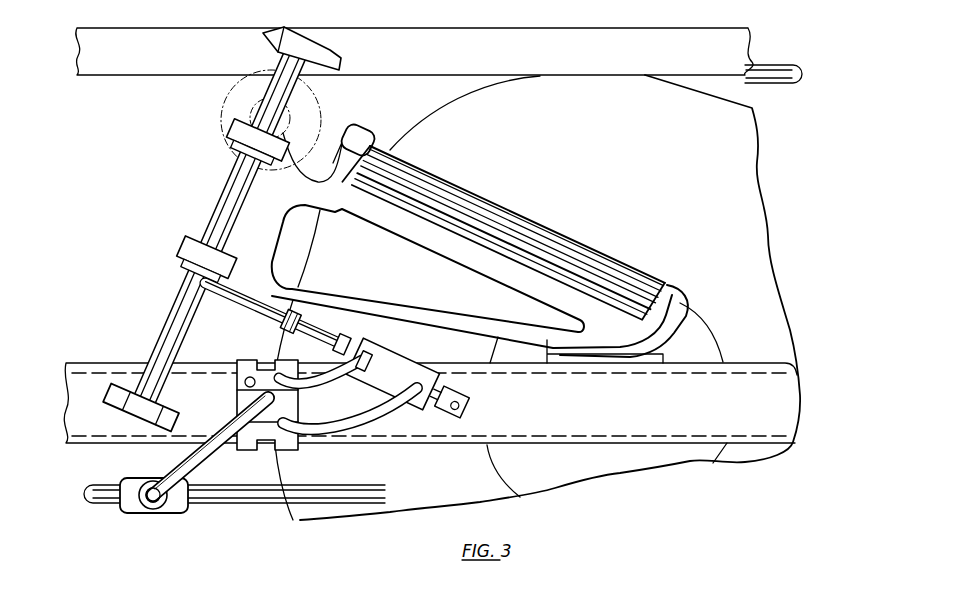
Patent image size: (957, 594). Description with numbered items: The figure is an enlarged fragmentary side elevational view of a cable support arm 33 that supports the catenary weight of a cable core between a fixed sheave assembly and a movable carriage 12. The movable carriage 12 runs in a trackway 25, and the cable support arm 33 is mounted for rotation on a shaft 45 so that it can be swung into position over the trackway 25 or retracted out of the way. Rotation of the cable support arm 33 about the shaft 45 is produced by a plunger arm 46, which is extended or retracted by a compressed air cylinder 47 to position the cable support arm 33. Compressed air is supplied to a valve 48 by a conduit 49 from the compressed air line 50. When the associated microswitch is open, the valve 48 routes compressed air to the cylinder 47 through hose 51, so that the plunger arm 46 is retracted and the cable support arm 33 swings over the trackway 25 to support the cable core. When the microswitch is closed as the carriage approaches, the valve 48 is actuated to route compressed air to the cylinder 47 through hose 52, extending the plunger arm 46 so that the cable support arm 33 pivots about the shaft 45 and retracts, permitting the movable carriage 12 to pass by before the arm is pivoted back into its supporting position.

The movable carriage 12 is at (733, 111).
The trackway 25 is at (745, 364).
The cable support arm 33 is at (522, 222).
The shaft 45 is at (171, 320).
The plunger arm 46 is at (307, 328).
The compressed air cylinder 47 is at (388, 352).
The valve 48 is at (237, 394).
The conduit 49 is at (203, 458).
The compressed air line 50 is at (253, 503).
The hose 51 is at (318, 382).
The hose 52 is at (385, 408).